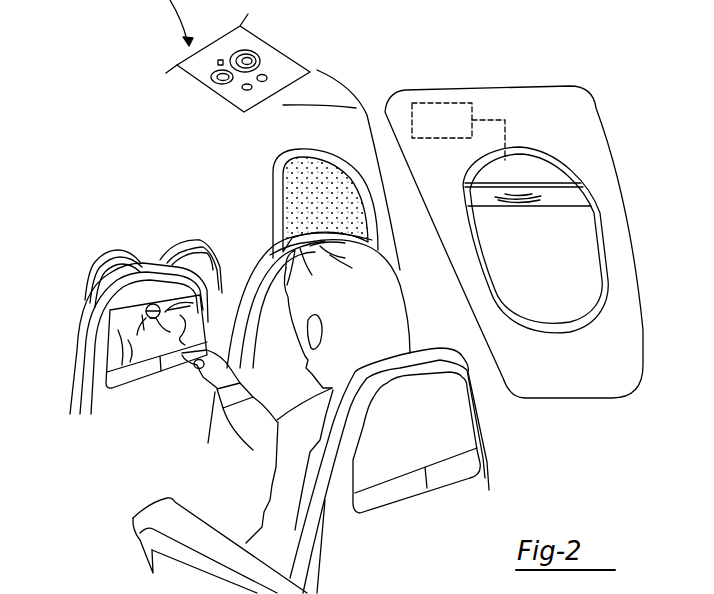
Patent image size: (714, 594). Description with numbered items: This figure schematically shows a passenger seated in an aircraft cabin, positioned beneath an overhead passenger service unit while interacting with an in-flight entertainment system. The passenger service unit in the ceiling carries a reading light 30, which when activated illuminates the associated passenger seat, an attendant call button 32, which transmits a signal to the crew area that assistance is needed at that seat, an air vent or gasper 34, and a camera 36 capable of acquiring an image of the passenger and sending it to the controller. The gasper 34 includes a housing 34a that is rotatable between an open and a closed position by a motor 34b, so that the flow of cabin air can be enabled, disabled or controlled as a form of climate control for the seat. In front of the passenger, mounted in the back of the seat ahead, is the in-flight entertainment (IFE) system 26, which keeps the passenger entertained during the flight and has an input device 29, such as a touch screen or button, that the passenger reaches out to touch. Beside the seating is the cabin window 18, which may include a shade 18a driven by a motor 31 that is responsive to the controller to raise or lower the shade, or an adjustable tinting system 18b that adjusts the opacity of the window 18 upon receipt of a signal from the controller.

The window 18 is at (524, 217).
The shade 18a is at (563, 180).
The adjustable tinting system 18b is at (303, 183).
The in-flight entertainment (IFE) system 26 is at (103, 368).
The input device 29 is at (177, 363).
The reading light 30 is at (250, 62).
The motor 31 is at (432, 103).
The attendant call button 32 is at (245, 90).
The air vent or gasper 34 is at (227, 79).
The housing 34a is at (212, 80).
The motor 34b is at (218, 63).
The camera 36 is at (263, 82).